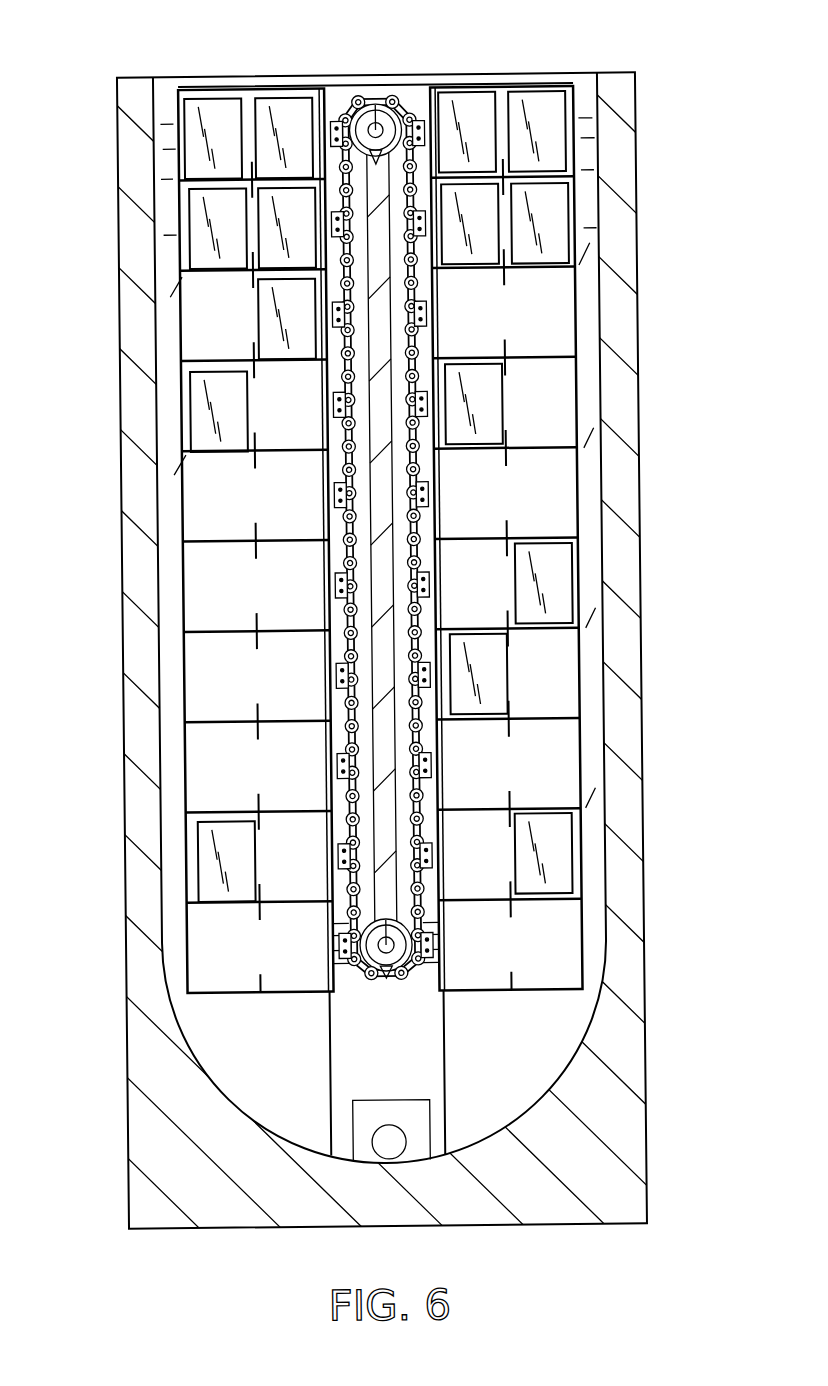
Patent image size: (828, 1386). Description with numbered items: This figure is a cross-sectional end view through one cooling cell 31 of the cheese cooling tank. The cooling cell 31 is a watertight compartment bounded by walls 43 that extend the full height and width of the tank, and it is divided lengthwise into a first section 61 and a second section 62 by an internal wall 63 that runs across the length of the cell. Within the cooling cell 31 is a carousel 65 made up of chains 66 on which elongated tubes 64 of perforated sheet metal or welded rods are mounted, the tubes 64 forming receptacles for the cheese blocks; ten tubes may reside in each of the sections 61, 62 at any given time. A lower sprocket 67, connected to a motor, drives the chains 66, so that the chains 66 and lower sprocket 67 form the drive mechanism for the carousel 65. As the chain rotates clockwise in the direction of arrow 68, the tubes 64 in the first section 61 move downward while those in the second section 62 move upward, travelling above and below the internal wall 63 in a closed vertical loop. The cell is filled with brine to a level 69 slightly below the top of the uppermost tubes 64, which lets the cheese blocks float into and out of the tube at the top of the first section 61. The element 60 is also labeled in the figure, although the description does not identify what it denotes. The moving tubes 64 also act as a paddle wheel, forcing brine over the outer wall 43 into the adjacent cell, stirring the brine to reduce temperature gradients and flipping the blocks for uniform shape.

The cooling cell 31 is at (683, 1078).
The walls 43 is at (135, 332).
The storage rack 60 is at (555, 134).
The first section 61 is at (553, 512).
The second section 62 is at (222, 752).
The internal wall 63 is at (383, 642).
The elongated tubes 64 is at (213, 94).
The carousel 65 is at (537, 907).
The chains 66 is at (378, 987).
The lower sprocket 67 is at (393, 982).
The arrow 68 is at (489, 1064).
The brine level 69 is at (583, 112).